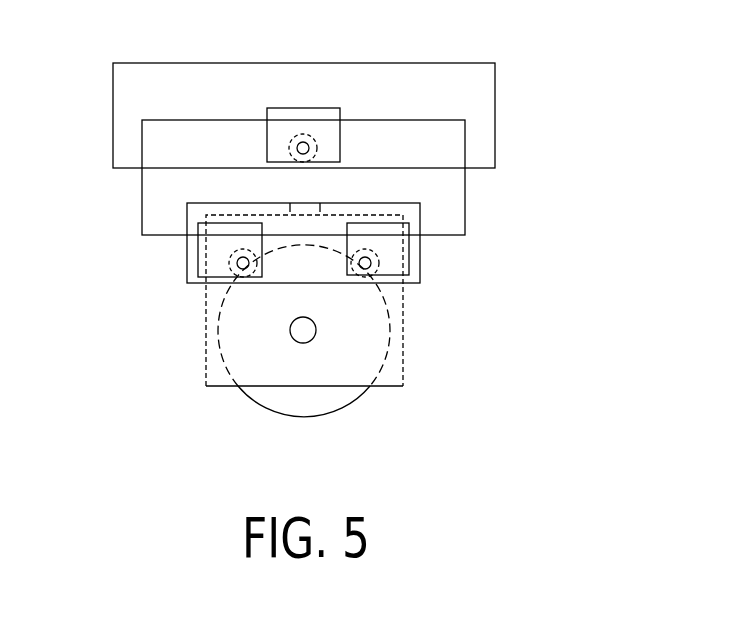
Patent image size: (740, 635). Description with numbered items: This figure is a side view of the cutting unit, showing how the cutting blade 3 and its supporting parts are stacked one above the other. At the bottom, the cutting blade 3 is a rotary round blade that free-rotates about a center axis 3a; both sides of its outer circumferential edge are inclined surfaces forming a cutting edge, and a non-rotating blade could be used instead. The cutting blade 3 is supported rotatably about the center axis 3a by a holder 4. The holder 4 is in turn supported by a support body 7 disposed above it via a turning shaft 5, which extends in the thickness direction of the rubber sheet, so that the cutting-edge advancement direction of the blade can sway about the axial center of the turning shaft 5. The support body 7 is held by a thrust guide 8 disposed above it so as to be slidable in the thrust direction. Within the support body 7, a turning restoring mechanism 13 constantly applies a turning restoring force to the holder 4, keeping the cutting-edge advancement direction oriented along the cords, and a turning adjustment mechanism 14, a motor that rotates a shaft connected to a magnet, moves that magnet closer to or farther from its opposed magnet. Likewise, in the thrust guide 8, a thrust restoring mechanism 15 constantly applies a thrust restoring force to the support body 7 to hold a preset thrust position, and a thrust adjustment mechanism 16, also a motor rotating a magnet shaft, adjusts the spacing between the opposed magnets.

The cutting blade 3 is at (277, 398).
The center axis 3a is at (307, 332).
The holder 4 is at (398, 362).
The turning shaft 5 is at (310, 212).
The support body 7 is at (467, 193).
The thrust guide 8 is at (403, 77).
The turning restoring mechanism 13 is at (227, 275).
The turning adjustment mechanism 14 is at (216, 250).
The thrust restoring mechanism 15 is at (291, 148).
The thrust adjustment mechanism 16 is at (283, 115).